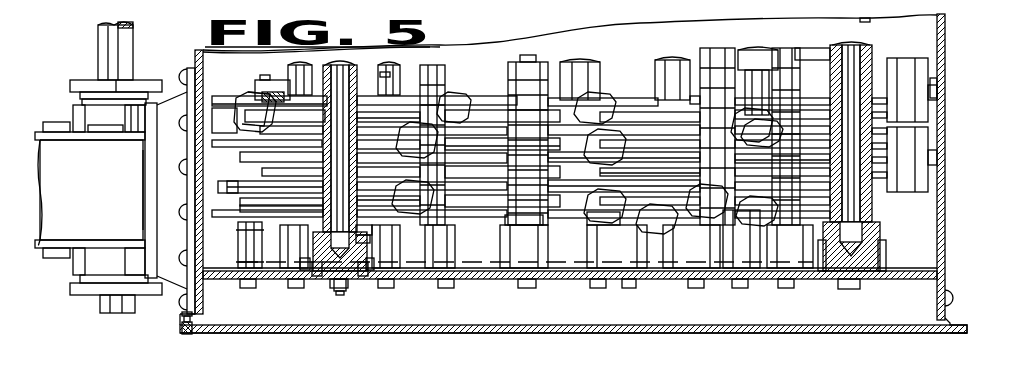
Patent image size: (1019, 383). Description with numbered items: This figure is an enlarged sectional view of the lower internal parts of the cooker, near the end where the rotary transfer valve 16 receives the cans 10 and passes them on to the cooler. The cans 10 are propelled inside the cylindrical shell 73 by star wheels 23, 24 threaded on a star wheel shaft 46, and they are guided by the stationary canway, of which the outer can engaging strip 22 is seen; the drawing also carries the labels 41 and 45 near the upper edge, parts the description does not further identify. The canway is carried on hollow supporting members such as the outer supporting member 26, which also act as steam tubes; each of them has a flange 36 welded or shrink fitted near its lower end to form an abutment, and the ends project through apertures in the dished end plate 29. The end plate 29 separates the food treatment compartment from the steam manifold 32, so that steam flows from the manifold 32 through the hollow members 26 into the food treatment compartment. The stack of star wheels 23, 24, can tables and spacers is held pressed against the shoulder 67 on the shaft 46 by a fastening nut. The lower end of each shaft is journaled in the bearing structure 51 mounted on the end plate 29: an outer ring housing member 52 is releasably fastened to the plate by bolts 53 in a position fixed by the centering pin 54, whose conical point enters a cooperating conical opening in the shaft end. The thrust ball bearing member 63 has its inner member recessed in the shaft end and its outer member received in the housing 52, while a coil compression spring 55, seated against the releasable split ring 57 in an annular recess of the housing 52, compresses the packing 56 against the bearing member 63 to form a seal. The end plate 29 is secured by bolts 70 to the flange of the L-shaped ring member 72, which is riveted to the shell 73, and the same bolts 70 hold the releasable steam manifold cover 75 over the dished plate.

The cans 10 is at (928, 63).
The rotary transfer valve 16 is at (49, 128).
The outer can engaging strip 22 is at (240, 186).
The star wheel 23 is at (534, 86).
The star wheel 24 is at (576, 80).
The outer supporting member 26 is at (238, 240).
The end plate 29 is at (588, 278).
The steam manifold 32 is at (918, 292).
The flange 36 is at (236, 275).
The disk 41 is at (320, 22).
The cover 45 is at (864, 11).
The star wheel shaft 46 is at (372, 18).
The bearing structure 51 is at (370, 276).
The outer ring housing member 52 is at (316, 251).
The bolts 53 is at (302, 271).
The centering pin 54 is at (341, 286).
The coil compression spring 55 is at (361, 232).
The packing 56 is at (359, 245).
The releasable split ring 57 is at (248, 210).
The thrust ball bearing member 63 is at (316, 274).
The shoulder 67 is at (348, 227).
The bolts 70 is at (182, 313).
The L-shaped ring member 72 is at (182, 327).
The cylindrical shell 73 is at (939, 96).
The steam manifold cover 75 is at (868, 325).